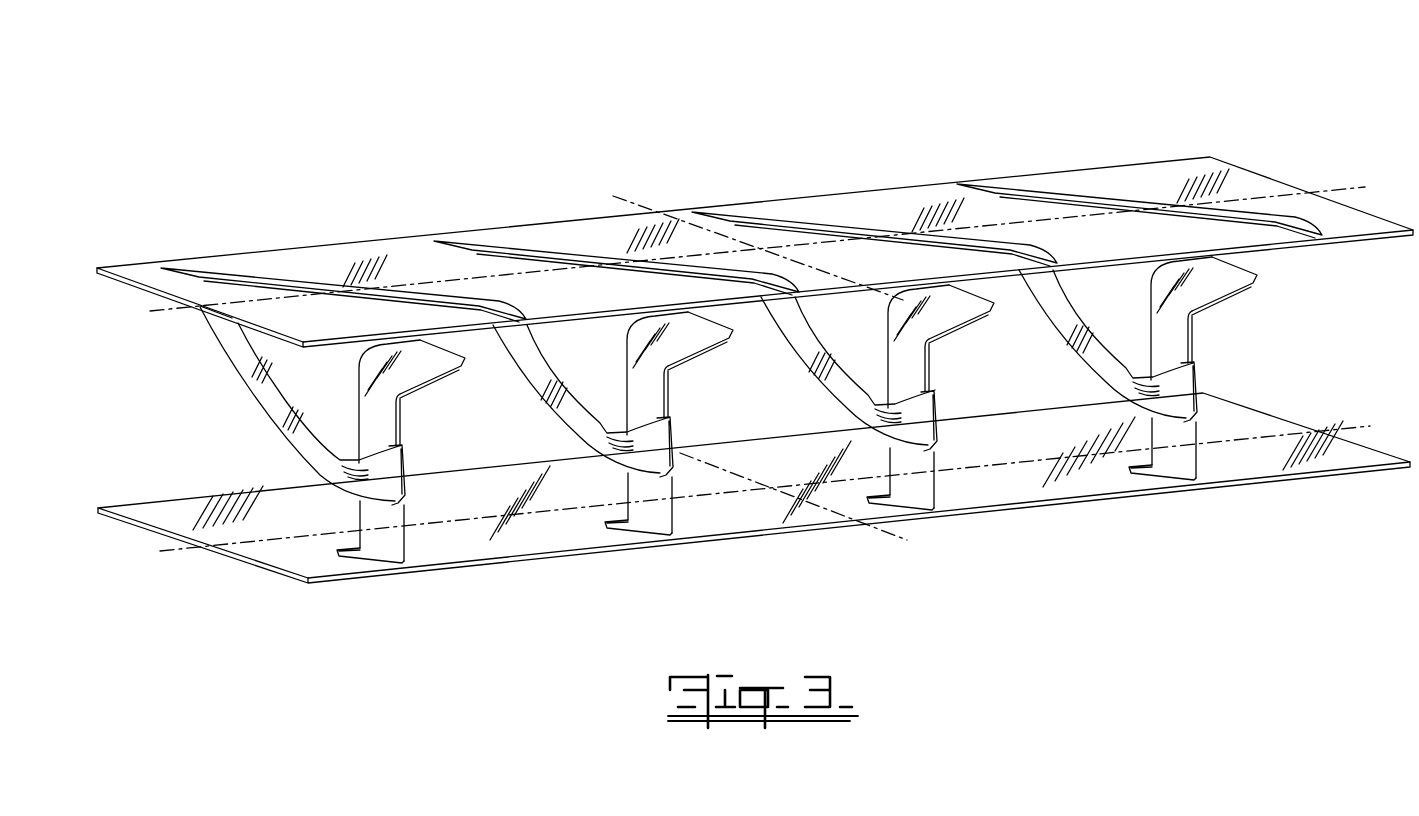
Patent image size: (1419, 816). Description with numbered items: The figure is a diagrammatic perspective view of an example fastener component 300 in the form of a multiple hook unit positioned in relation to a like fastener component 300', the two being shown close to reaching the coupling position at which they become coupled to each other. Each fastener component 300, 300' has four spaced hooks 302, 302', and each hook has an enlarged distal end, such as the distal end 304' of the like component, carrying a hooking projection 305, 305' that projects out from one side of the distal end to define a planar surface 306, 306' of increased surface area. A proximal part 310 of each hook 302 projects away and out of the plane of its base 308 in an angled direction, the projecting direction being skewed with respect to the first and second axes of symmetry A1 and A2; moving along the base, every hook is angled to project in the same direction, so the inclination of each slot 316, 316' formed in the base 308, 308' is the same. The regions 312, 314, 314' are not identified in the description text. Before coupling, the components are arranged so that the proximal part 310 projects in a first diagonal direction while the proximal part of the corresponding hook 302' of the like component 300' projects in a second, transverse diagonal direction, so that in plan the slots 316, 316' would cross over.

The fastener component 300 is at (755, 223).
The like fastener component 300' is at (754, 511).
The hook 302 is at (279, 404).
The hook 302' is at (815, 360).
The enlarged distal end 304' is at (1299, 286).
The hooking projection 305 is at (575, 438).
The hooking projection 305' is at (1256, 360).
The planar surface 306 is at (498, 528).
The planar surface 306' is at (995, 336).
The upper plate 308 is at (755, 224).
The lower plate 308' is at (754, 506).
The proximal part 310 is at (225, 322).
The slot 312 is at (431, 241).
The bend 314 is at (843, 371).
The bend 314' is at (456, 413).
The slot 316 is at (343, 254).
The slot 316' is at (399, 587).
The first axis of symmetry A1 is at (740, 259).
The second axis of symmetry A2 is at (737, 232).